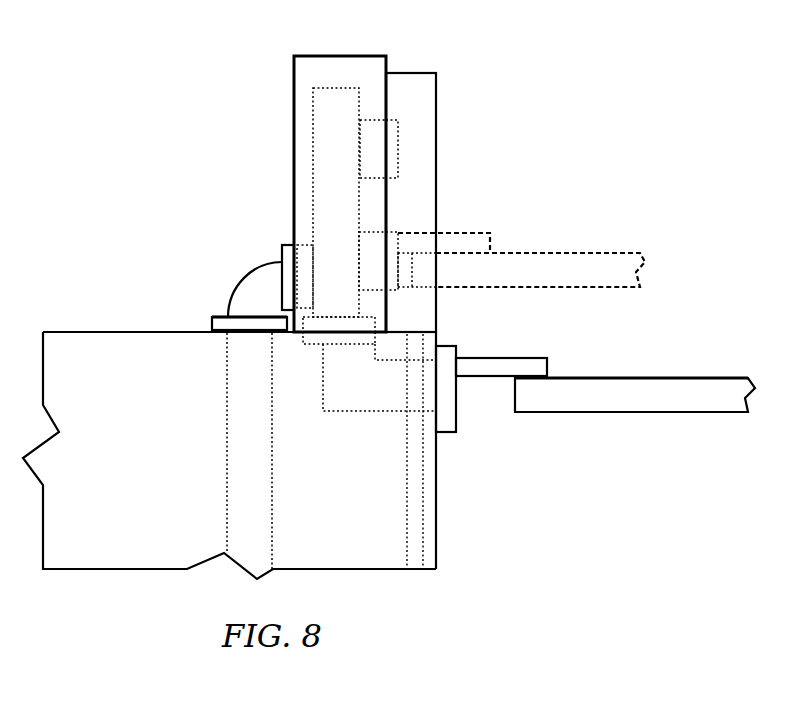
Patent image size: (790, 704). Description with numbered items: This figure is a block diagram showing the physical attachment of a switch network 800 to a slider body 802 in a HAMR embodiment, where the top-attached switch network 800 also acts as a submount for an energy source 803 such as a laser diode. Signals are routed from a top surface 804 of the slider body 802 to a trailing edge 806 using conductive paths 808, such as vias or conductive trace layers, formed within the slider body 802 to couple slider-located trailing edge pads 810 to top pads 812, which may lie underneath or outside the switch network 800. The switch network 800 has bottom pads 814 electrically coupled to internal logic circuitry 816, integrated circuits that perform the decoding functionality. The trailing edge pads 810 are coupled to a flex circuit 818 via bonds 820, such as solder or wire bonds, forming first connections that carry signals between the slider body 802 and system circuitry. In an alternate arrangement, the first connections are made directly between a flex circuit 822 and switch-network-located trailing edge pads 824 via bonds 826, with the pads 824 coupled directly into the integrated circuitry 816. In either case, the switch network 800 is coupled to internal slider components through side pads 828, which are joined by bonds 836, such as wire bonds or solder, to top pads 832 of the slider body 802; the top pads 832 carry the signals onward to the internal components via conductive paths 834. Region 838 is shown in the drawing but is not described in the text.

The switch network 800 is at (345, 56).
The slider body 802 is at (108, 570).
The energy source 803 is at (415, 73).
The top surface 804 is at (108, 332).
The trailing edge 806 is at (437, 533).
The conductive paths 808 is at (370, 404).
The trailing edge pads 810 is at (452, 432).
The top pads 812 is at (305, 345).
The bottom pads 814 is at (345, 316).
The internal logic circuitry 816 is at (313, 110).
The flex circuit 818 is at (598, 413).
The bonds 820 is at (548, 366).
The flex circuit 822 is at (568, 287).
The switch-network-located trailing edge pads 824 is at (398, 290).
The bonds 826 is at (487, 232).
The side pads 828 is at (282, 245).
The top pads 832 is at (228, 333).
The conductive paths 834 is at (230, 420).
The bonds 836 is at (372, 120).
The window 838 is at (398, 143).